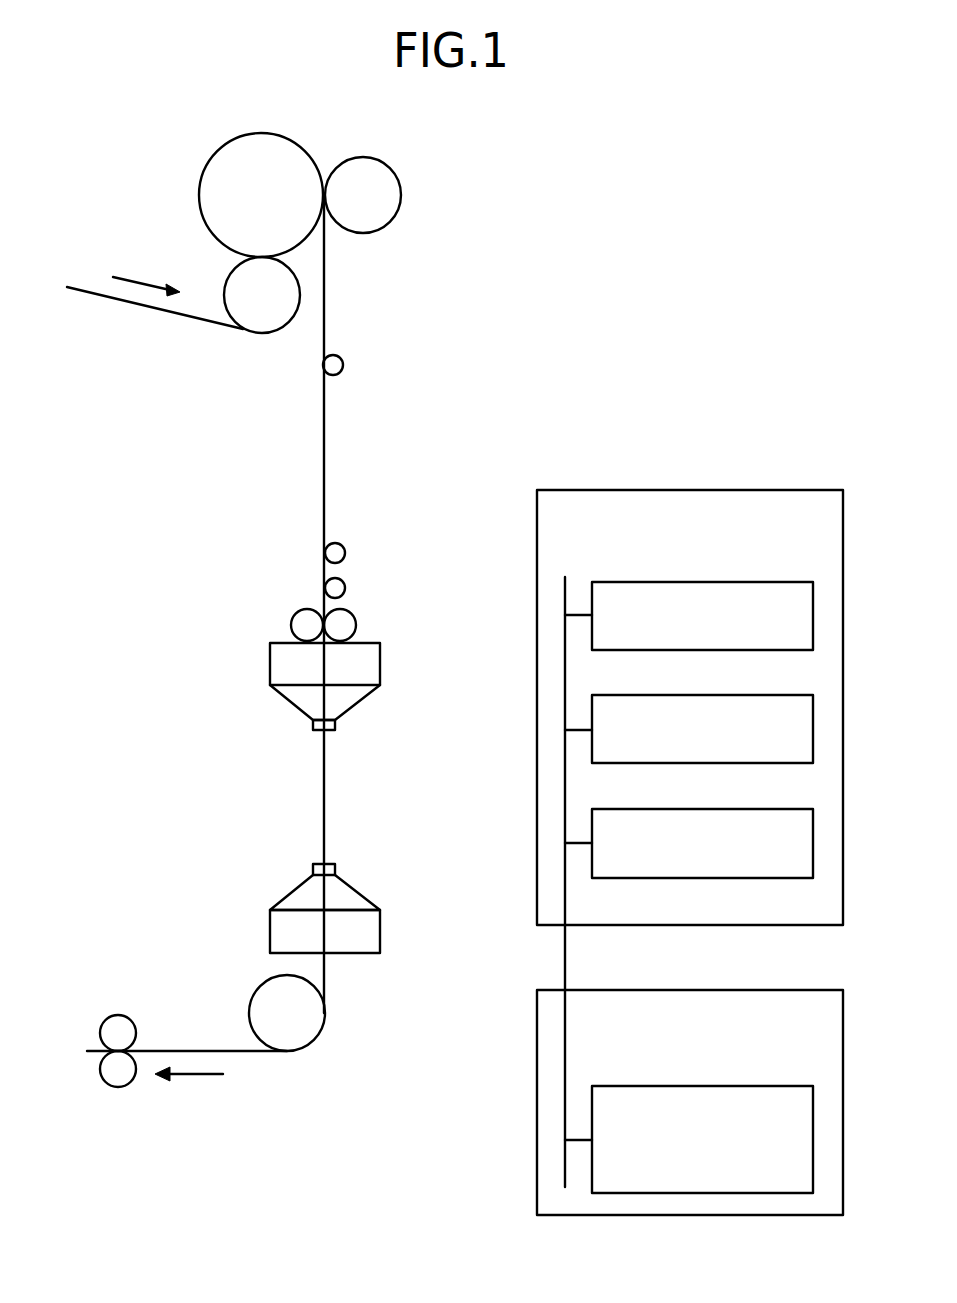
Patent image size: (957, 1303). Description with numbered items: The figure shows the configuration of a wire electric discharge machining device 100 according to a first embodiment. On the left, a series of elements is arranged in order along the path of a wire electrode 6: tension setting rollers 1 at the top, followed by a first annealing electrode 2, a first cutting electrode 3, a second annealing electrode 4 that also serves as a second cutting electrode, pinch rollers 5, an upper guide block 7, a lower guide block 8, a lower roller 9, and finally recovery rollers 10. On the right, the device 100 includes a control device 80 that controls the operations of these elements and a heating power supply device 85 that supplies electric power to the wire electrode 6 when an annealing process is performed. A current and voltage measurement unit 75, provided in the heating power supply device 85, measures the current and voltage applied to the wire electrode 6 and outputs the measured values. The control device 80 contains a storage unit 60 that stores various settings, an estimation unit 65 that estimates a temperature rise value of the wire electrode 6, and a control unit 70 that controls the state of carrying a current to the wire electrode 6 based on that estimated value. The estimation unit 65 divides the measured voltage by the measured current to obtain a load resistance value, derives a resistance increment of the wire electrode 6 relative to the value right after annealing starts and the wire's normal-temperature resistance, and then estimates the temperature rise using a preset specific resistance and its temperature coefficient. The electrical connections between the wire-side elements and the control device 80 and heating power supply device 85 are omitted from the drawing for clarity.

The tension setting rollers 1 is at (200, 177).
The first annealing electrode 2 is at (343, 366).
The first cutting electrode 3 is at (345, 556).
The second annealing electrode 4 is at (345, 591).
The pinch rollers 5 is at (291, 627).
The wire electrode 6 is at (325, 810).
The upper guide block 7 is at (270, 672).
The lower guide block 8 is at (380, 931).
The lower roller 9 is at (325, 1034).
The recovery rollers 10 is at (136, 1036).
The storage unit 60 is at (730, 809).
The estimation unit 65 is at (730, 695).
The control unit 70 is at (730, 582).
The current and voltage measurement unit 75 is at (730, 1086).
The control device 80 is at (682, 490).
The heating power supply device 85 is at (730, 990).
The wire electric discharge machining device 100 is at (563, 329).